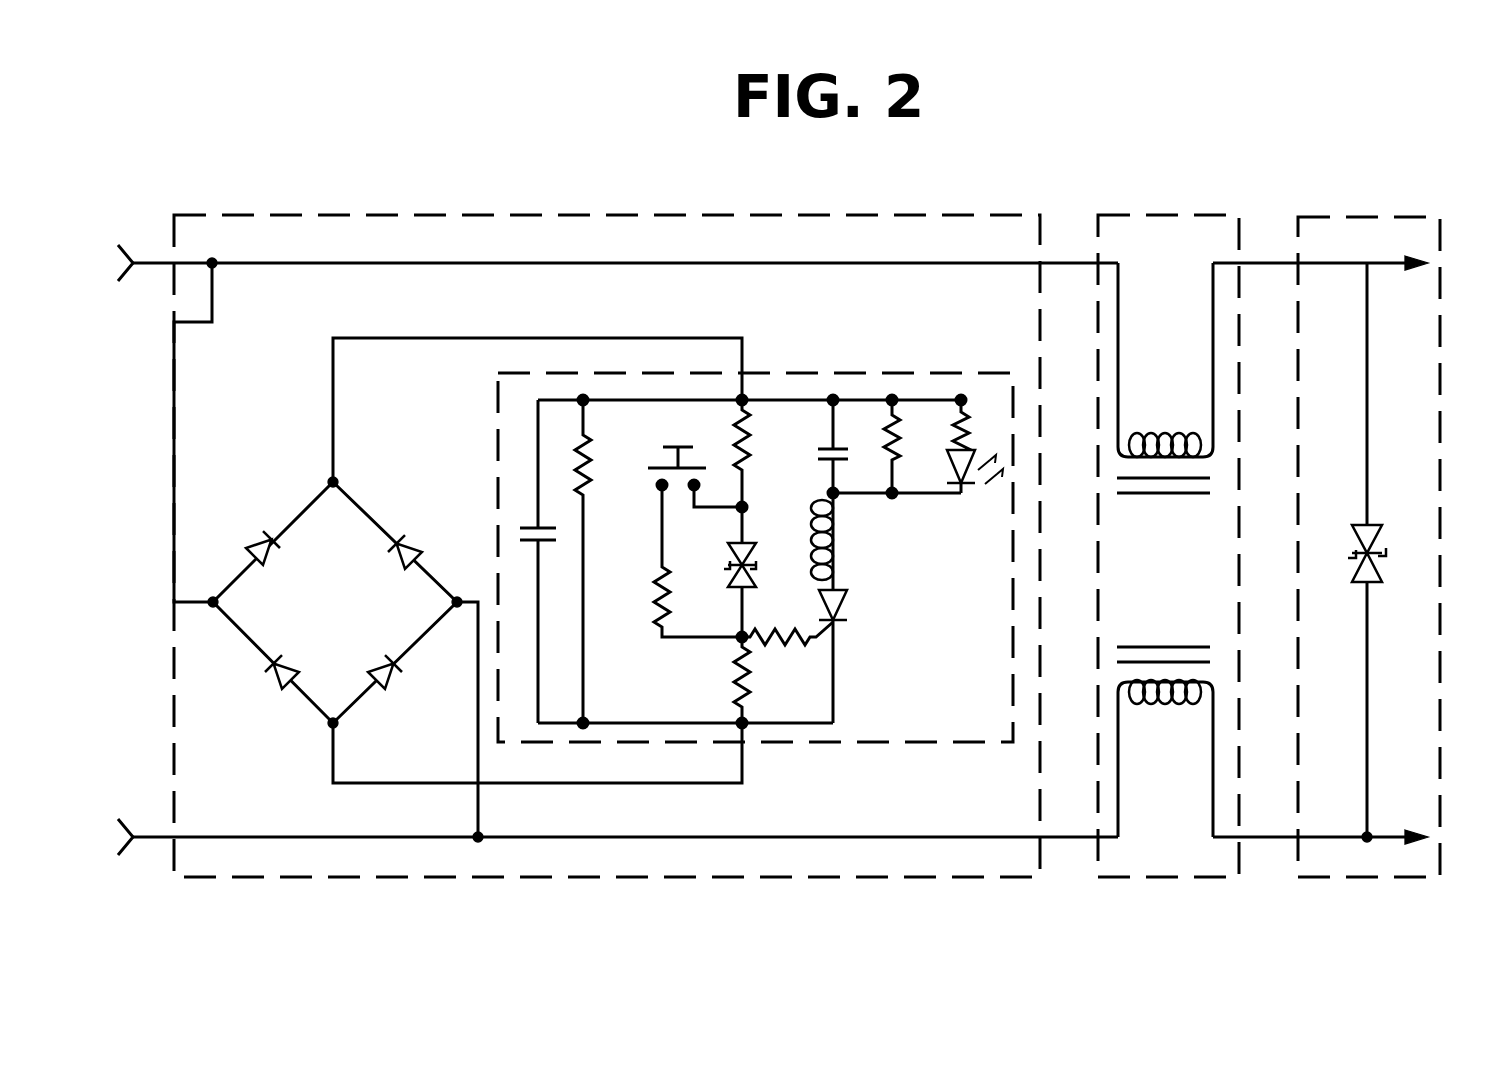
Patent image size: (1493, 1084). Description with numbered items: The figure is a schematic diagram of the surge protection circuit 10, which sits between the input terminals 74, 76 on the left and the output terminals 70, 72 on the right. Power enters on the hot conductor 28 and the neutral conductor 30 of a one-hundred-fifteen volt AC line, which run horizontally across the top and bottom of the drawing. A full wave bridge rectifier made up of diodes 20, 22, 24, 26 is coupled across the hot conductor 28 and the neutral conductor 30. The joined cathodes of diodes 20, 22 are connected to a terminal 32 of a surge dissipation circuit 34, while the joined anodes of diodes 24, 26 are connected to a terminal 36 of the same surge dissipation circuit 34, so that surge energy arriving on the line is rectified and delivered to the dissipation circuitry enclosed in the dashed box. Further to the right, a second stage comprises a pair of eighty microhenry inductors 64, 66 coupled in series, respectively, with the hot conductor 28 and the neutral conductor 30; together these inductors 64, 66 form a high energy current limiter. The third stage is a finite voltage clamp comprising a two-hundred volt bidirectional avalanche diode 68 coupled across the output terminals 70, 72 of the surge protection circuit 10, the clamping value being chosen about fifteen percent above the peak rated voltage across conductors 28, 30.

The surge protection circuit 10 is at (598, 200).
The diode 20 is at (263, 532).
The diode 22 is at (419, 543).
The diode 24 is at (281, 680).
The diode 26 is at (385, 687).
The hot conductor 28 is at (438, 262).
The neutral conductor 30 is at (716, 840).
The terminal 32 is at (630, 338).
The surge dissipation circuit 34 is at (785, 373).
The terminal 36 is at (745, 783).
The inductor 64 is at (1185, 438).
The inductor 66 is at (1192, 700).
The bidirectional avalanche diode 68 is at (1380, 532).
The output terminal 70 is at (1392, 258).
The output terminal 72 is at (1394, 840).
The input terminal 74 is at (126, 253).
The input terminal 76 is at (136, 795).